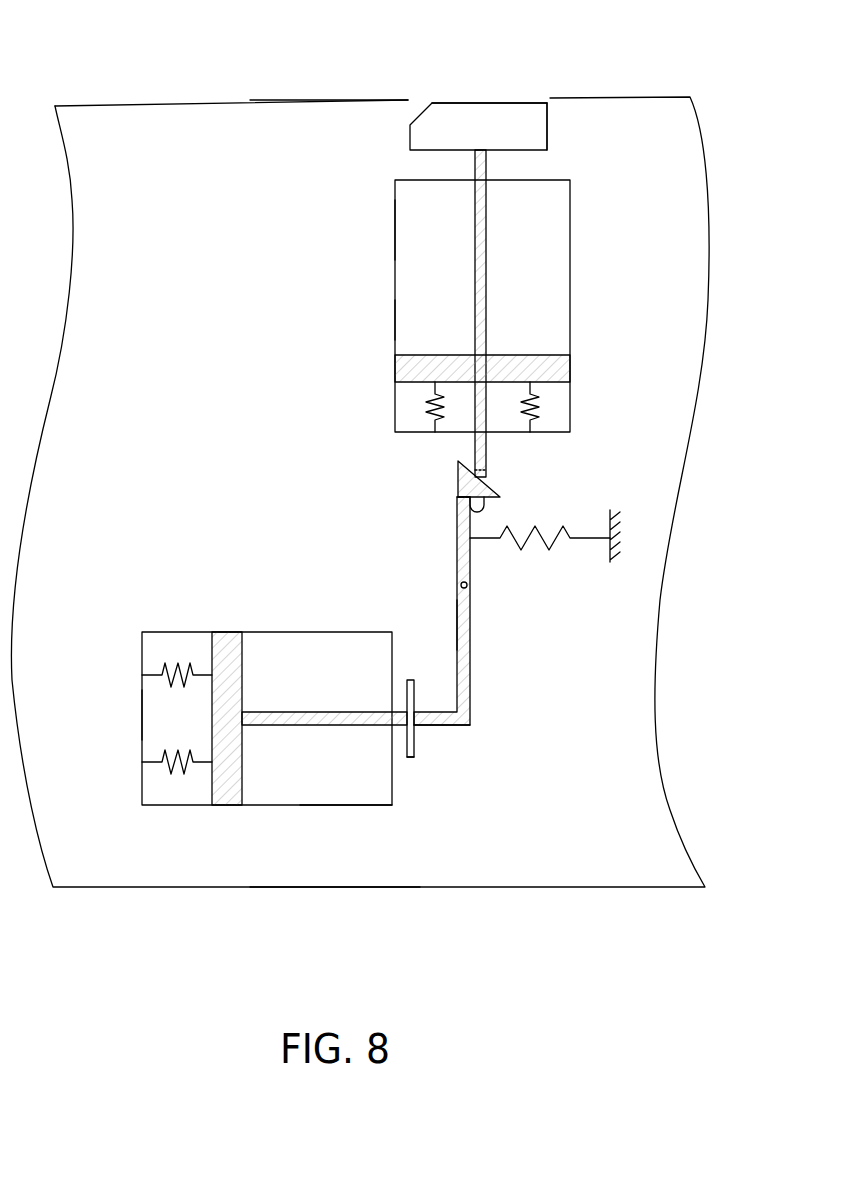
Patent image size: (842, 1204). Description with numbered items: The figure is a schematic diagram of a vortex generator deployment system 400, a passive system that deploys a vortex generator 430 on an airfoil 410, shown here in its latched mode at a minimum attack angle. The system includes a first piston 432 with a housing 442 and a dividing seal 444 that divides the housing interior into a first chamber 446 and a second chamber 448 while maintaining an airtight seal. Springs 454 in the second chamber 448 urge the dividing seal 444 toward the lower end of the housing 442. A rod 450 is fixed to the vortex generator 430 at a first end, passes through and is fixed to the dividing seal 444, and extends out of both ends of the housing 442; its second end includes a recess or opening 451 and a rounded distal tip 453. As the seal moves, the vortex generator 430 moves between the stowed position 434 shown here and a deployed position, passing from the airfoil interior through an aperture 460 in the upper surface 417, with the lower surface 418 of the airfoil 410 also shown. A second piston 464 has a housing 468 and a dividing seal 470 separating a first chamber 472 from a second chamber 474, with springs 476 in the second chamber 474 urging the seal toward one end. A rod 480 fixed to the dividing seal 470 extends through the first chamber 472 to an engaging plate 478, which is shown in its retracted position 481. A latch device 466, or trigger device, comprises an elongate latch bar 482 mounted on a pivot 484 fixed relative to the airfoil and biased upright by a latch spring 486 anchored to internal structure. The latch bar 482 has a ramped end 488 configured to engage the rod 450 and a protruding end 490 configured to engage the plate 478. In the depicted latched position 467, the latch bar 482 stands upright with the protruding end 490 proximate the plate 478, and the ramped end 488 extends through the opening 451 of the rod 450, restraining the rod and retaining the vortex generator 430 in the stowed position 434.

The vortex generator deployment system 400 is at (118, 88).
The airfoil 410 is at (232, 890).
The upper surface 417 is at (303, 92).
The second edge 418 is at (337, 902).
The vortex generator 430 is at (540, 120).
The first piston 432 is at (378, 311).
The stowed position 434 is at (568, 155).
The housing 442 is at (572, 278).
The dividing seal 444 is at (568, 368).
The first chamber 446 is at (413, 225).
The second chamber 448 is at (413, 404).
The rod 450 is at (483, 275).
The recess or opening 451 is at (483, 475).
The rounded distal tip 453 is at (493, 505).
The springs 454 is at (548, 414).
The aperture 460 is at (485, 103).
The second piston 464 is at (122, 712).
The latch device 466 is at (572, 662).
The latched position 467 is at (375, 512).
The housing 468 is at (272, 806).
The dividing seal 470 is at (226, 640).
The first chamber 472 is at (343, 806).
The second chamber 474 is at (182, 806).
The springs 476 is at (160, 672).
The engaging plate 478 is at (412, 745).
The rod 480 is at (318, 718).
The retracted position 481 is at (412, 775).
The latch bar 482 is at (470, 682).
The pivot 484 is at (470, 586).
The latch spring 486 is at (568, 547).
The ramped end 488 is at (470, 487).
The protruding end 490 is at (455, 720).